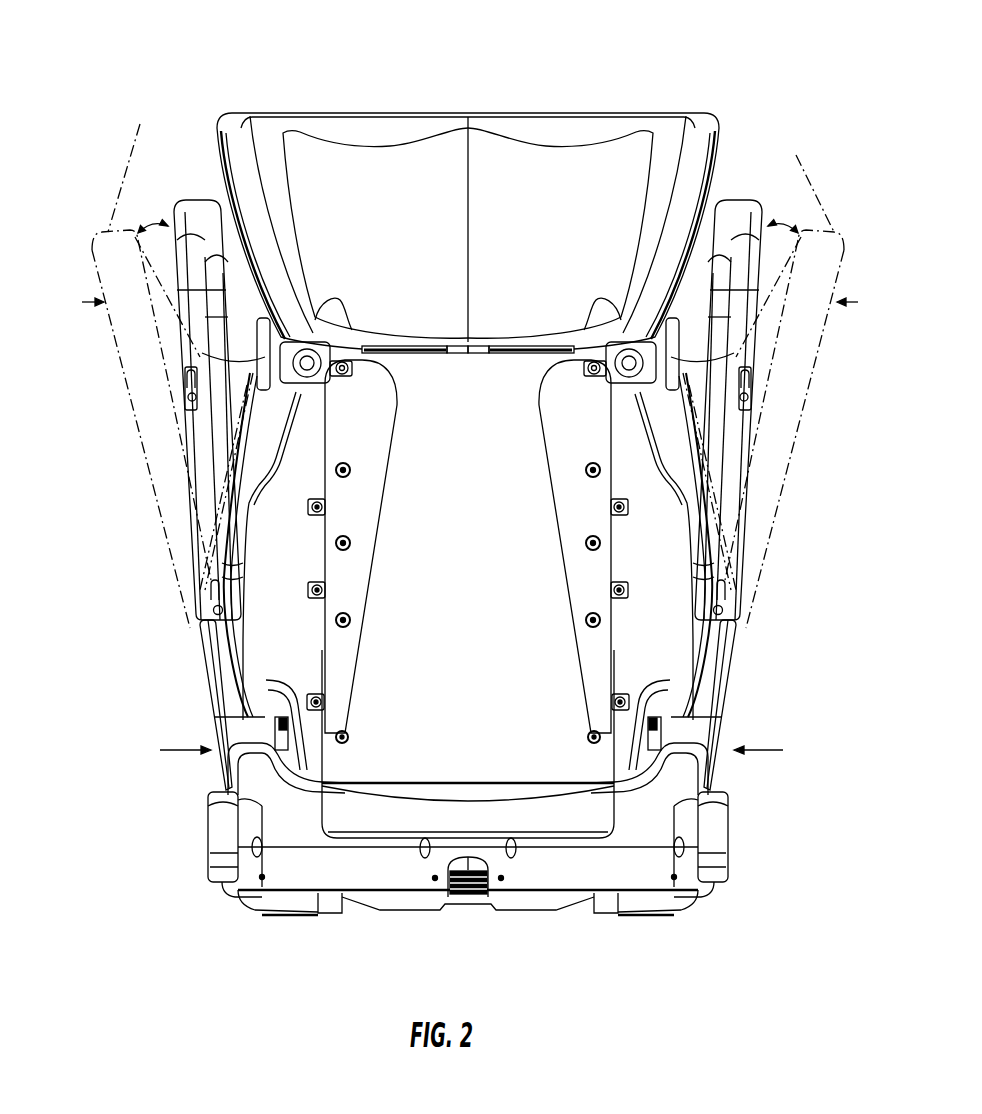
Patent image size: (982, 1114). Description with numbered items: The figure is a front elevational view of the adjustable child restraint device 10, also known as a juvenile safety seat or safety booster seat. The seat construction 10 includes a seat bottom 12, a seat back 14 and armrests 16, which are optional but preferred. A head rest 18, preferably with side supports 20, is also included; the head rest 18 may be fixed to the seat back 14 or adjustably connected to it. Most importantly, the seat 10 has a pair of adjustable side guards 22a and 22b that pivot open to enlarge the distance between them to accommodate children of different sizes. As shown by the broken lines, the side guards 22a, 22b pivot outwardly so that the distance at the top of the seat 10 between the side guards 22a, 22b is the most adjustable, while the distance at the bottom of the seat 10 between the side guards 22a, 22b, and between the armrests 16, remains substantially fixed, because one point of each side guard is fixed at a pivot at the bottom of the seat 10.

The adjustable child restraint device 10 is at (740, 76).
The seat bottom 12 is at (585, 827).
The seat back 14 is at (508, 623).
The armrest 16 is at (730, 650).
The head rest 18 is at (495, 110).
The side supports 20 is at (680, 175).
The adjustable side guard 22a is at (185, 200).
The adjustable side guard 22b is at (753, 200).